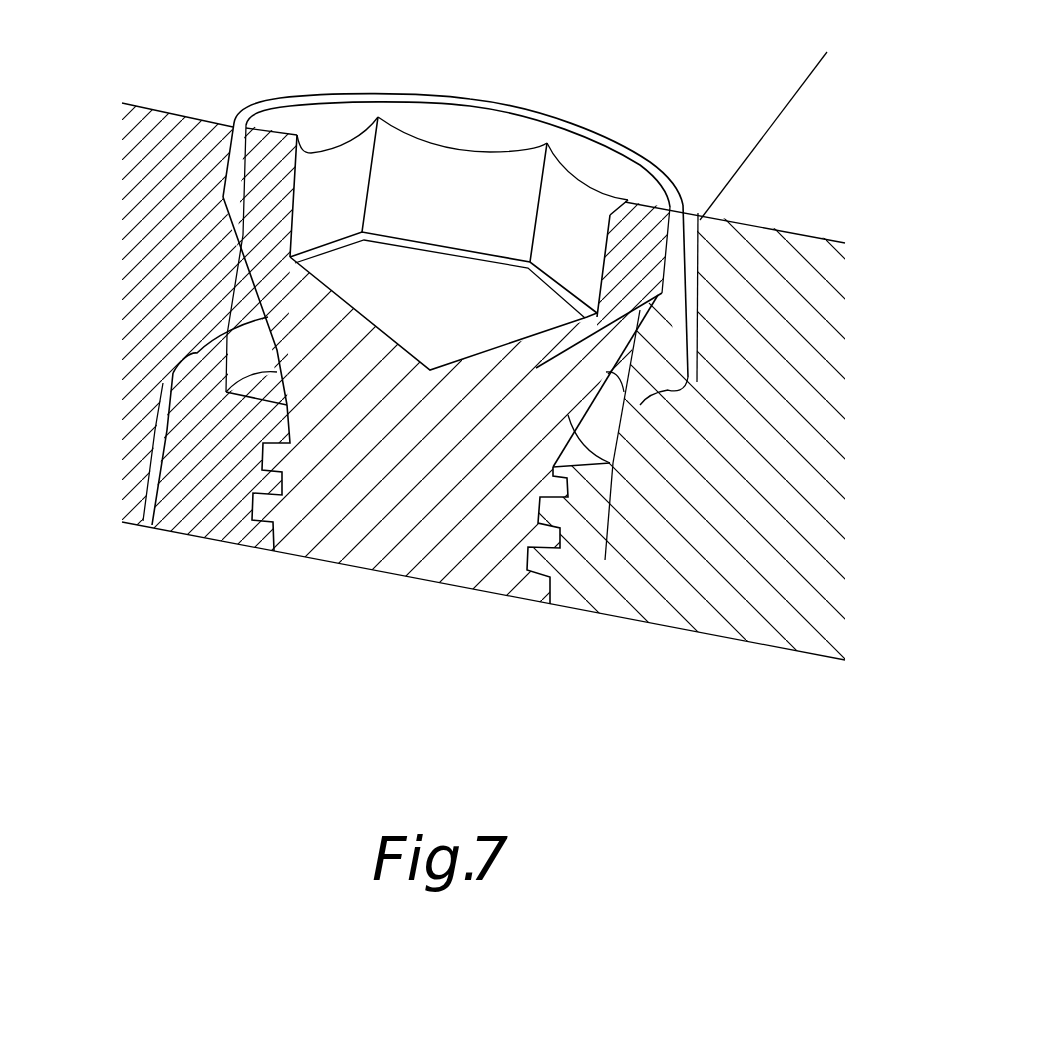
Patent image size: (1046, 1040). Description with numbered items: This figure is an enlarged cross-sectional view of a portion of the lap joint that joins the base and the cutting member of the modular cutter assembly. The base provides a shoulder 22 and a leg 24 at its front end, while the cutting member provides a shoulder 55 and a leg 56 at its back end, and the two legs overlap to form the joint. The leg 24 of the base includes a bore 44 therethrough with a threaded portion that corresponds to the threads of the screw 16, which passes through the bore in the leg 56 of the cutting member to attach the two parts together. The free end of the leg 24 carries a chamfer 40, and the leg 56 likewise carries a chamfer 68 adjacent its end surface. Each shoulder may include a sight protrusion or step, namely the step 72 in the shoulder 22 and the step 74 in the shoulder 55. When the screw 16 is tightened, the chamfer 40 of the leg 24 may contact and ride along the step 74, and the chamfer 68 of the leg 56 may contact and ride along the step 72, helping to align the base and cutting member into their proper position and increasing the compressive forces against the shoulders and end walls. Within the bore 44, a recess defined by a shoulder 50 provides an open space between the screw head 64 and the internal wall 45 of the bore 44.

The screw 16 is at (637, 233).
The shoulder 22 is at (705, 258).
The leg 24 is at (223, 510).
The chamfer 40 is at (197, 353).
The bore 44 is at (623, 413).
The internal wall 45 is at (267, 362).
The shoulder 50 is at (573, 443).
The shoulder 55 is at (147, 452).
The leg 56 is at (200, 130).
The head 64 is at (537, 370).
The chamfer 68 is at (628, 412).
The step 72 is at (678, 411).
The step 74 is at (172, 375).